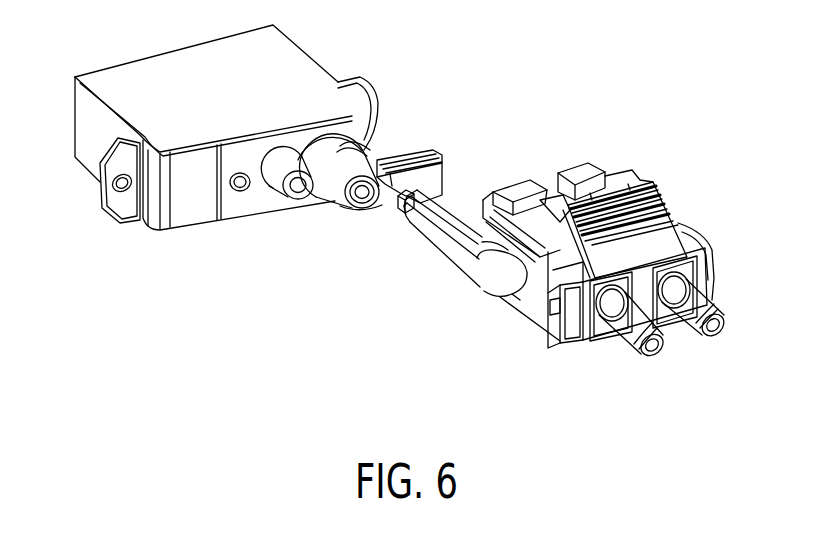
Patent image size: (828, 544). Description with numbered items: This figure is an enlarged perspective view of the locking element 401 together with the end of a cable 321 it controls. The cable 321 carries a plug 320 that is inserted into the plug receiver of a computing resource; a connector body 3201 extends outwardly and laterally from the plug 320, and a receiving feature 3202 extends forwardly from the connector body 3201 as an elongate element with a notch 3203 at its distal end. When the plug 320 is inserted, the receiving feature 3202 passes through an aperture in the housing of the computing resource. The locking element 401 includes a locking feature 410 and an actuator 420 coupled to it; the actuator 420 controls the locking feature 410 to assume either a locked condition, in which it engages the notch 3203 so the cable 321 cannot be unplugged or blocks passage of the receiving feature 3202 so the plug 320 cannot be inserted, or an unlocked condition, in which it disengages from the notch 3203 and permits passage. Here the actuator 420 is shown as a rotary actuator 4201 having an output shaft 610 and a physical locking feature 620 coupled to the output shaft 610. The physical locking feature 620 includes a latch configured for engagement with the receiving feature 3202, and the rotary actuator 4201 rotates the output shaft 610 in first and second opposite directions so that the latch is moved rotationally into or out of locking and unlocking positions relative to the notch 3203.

The actuator 420 is at (122, 80).
The rotary actuator 4201 is at (240, 103).
The output shaft 610 is at (342, 160).
The locking element 401 is at (422, 130).
The physical locking feature 620 is at (422, 182).
The locking feature 410 is at (372, 212).
The notch 3203 is at (407, 213).
The receiving feature 3202 is at (447, 252).
The connector body 3201 is at (503, 277).
The plug 320 is at (570, 336).
The cable 321 is at (710, 337).